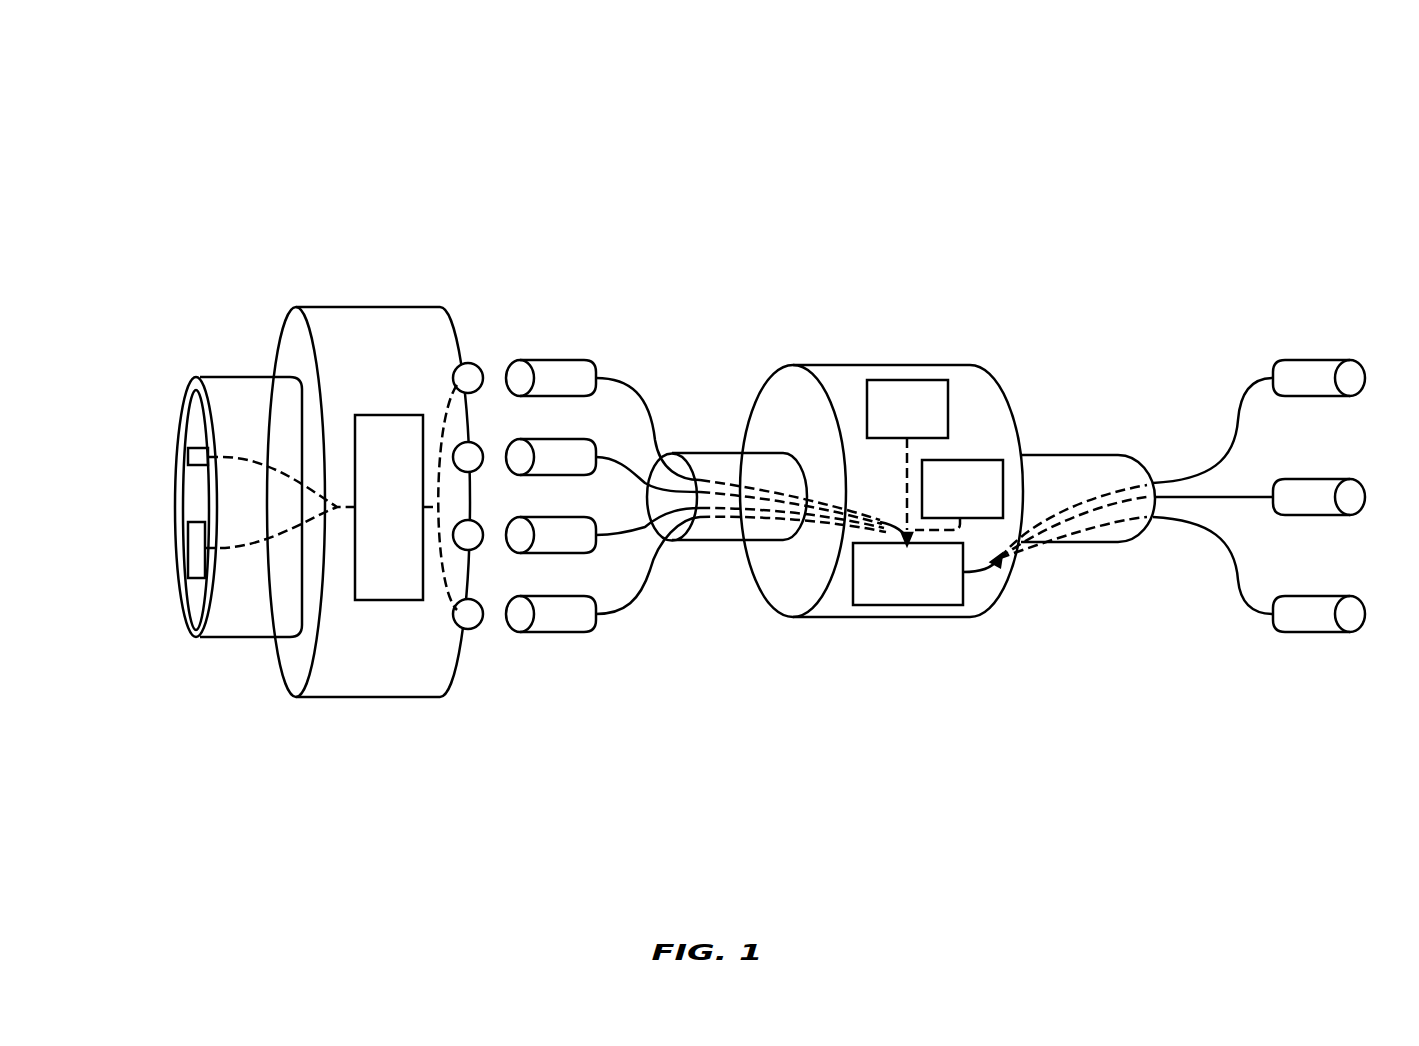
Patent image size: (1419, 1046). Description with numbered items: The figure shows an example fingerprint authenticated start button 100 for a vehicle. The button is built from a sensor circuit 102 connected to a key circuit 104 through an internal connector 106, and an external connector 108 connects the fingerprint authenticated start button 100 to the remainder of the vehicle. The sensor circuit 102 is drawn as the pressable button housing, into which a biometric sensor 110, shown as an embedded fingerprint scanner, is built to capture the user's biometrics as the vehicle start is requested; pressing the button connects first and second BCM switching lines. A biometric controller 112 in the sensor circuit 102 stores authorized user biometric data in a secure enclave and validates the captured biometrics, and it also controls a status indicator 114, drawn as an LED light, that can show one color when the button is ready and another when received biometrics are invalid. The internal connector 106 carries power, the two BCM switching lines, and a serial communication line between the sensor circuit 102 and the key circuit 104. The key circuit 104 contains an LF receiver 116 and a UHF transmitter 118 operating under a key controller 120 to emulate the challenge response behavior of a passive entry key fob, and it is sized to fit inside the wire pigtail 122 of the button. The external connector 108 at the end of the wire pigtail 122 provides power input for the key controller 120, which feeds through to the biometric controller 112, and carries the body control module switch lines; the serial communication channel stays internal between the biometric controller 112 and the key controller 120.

The fingerprint authenticated start button 100 is at (206, 70).
The sensor circuit 102 is at (150, 318).
The key circuit 104 is at (750, 318).
The internal connector 106 is at (593, 318).
The external connector 108 is at (1253, 318).
The biometric sensor 110 is at (188, 548).
The biometric controller 112 is at (390, 600).
The status indicator 114 is at (188, 457).
The LF receiver 116 is at (959, 495).
The UHF transmitter 118 is at (907, 455).
The key controller 120 is at (927, 563).
The wire pigtail 122 is at (1147, 655).